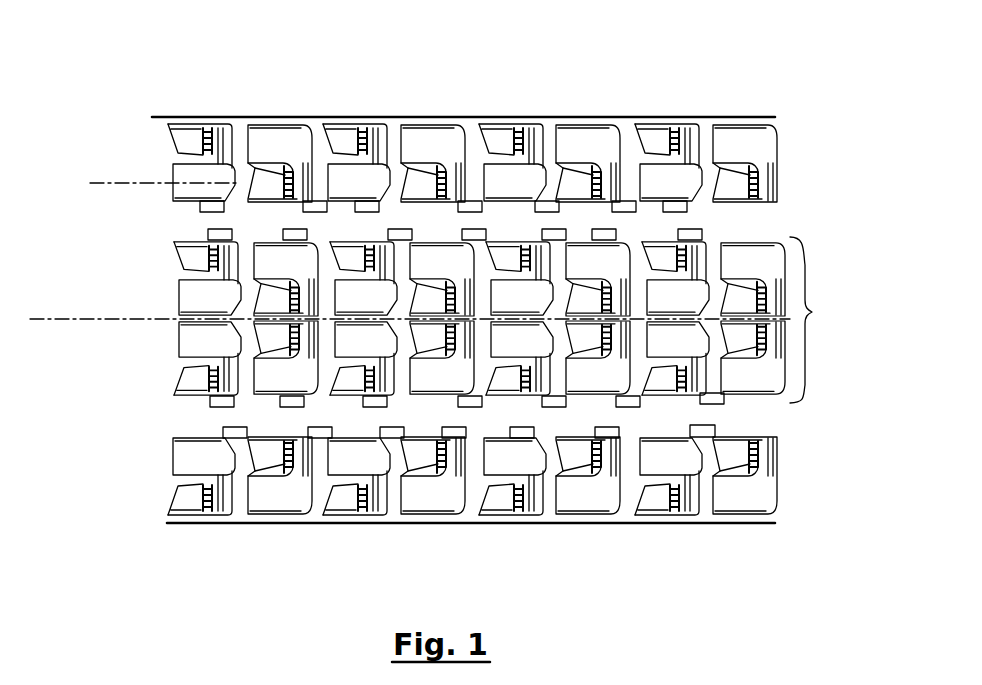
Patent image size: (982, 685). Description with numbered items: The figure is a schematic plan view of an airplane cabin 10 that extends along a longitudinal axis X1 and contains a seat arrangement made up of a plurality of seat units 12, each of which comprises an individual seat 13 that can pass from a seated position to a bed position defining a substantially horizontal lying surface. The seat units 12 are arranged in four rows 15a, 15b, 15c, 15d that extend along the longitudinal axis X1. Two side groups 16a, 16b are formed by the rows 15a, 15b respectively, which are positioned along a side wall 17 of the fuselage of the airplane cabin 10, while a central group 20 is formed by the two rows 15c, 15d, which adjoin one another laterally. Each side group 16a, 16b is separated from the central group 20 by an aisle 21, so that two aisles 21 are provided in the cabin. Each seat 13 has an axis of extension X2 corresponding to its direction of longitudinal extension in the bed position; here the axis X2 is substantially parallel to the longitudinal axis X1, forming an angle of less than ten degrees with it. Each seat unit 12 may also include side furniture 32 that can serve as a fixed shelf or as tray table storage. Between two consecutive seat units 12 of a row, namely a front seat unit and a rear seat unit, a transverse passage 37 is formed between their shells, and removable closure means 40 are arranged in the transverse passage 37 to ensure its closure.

The airplane cabin 10 is at (466, 307).
The seat unit 12 is at (543, 98).
The seat 13 is at (589, 319).
The row 15a is at (455, 319).
The row 15b is at (122, 505).
The row 15c is at (143, 378).
The row 15d is at (148, 267).
The side group 16a is at (475, 319).
The side group 16b is at (462, 505).
The side wall 17 is at (302, 116).
The central group 20 is at (458, 319).
The aisle 21 is at (458, 319).
The side furniture 32 is at (430, 185).
The transverse passage 37 is at (634, 213).
The closure means 40 is at (702, 433).
The longitudinal axis X1 is at (118, 318).
The axis of extension X2 is at (113, 183).